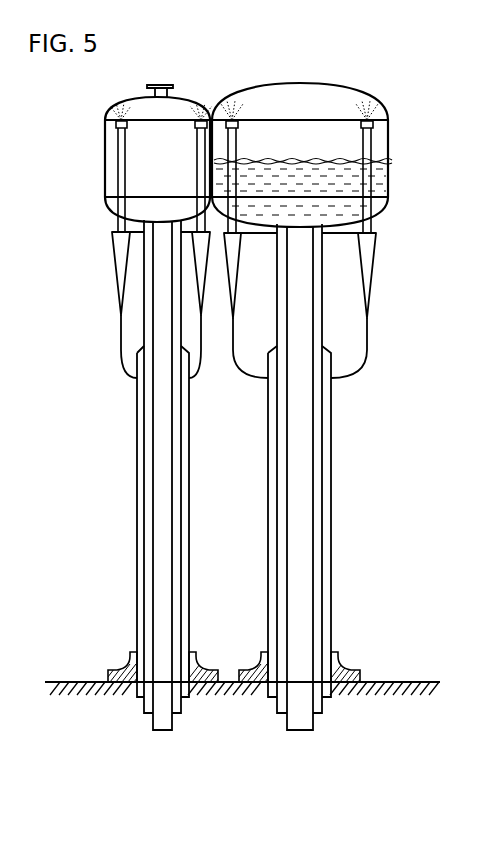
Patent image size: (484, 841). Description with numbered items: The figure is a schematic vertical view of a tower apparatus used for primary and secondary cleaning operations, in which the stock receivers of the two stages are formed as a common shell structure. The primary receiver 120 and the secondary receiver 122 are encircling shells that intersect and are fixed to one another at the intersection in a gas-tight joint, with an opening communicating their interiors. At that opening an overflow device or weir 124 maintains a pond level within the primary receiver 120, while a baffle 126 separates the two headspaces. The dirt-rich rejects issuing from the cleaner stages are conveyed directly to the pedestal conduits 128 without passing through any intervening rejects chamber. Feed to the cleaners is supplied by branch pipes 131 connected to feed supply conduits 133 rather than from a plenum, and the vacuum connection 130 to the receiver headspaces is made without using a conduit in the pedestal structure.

The primary receiver 120 is at (388, 150).
The secondary receiver 122 is at (105, 163).
The overflow device or weir 124 is at (200, 187).
The baffle 126 is at (215, 135).
The pedestal conduits 128 is at (242, 363).
The vacuum connection 130 is at (161, 84).
The branch pipes 131 is at (133, 238).
The feed supply conduits 133 is at (148, 330).